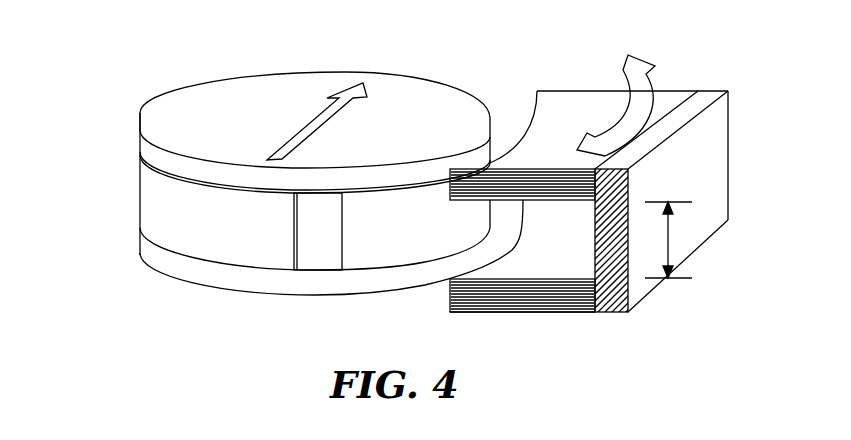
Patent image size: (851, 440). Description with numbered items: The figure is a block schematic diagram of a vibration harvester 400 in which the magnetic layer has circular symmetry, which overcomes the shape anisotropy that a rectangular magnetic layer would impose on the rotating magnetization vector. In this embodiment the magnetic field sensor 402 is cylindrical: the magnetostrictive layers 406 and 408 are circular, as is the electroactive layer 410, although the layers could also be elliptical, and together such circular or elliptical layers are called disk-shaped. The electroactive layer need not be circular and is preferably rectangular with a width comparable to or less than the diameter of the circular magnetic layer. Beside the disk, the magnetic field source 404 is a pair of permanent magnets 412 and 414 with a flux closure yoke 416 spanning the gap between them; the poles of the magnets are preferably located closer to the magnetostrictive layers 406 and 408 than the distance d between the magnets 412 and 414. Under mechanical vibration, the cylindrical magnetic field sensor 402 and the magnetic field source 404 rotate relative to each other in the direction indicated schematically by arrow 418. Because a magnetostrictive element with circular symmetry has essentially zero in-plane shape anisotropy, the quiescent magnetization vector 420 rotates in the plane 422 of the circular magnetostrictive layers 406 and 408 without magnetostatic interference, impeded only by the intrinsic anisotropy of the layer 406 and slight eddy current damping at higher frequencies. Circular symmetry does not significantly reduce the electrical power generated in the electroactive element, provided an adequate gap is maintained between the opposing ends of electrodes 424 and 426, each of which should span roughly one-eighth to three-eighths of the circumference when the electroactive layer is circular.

The vibration harvester 400 is at (160, 350).
The magnetic field sensor 402 is at (180, 67).
The magnetic field source 404 is at (713, 21).
The magnetostrictive layer 406 is at (162, 153).
The magnetostrictive layer 408 is at (153, 257).
The electroactive layer 410 is at (313, 233).
The permanent magnet 412 is at (597, 105).
The permanent magnet 414 is at (513, 312).
The flux closure yoke 416 is at (697, 170).
The arrow 418 is at (655, 73).
The quiescent magnetization vector 420 is at (353, 88).
The plane 422 is at (425, 118).
The electrode 424 is at (217, 248).
The electrode 426 is at (408, 248).